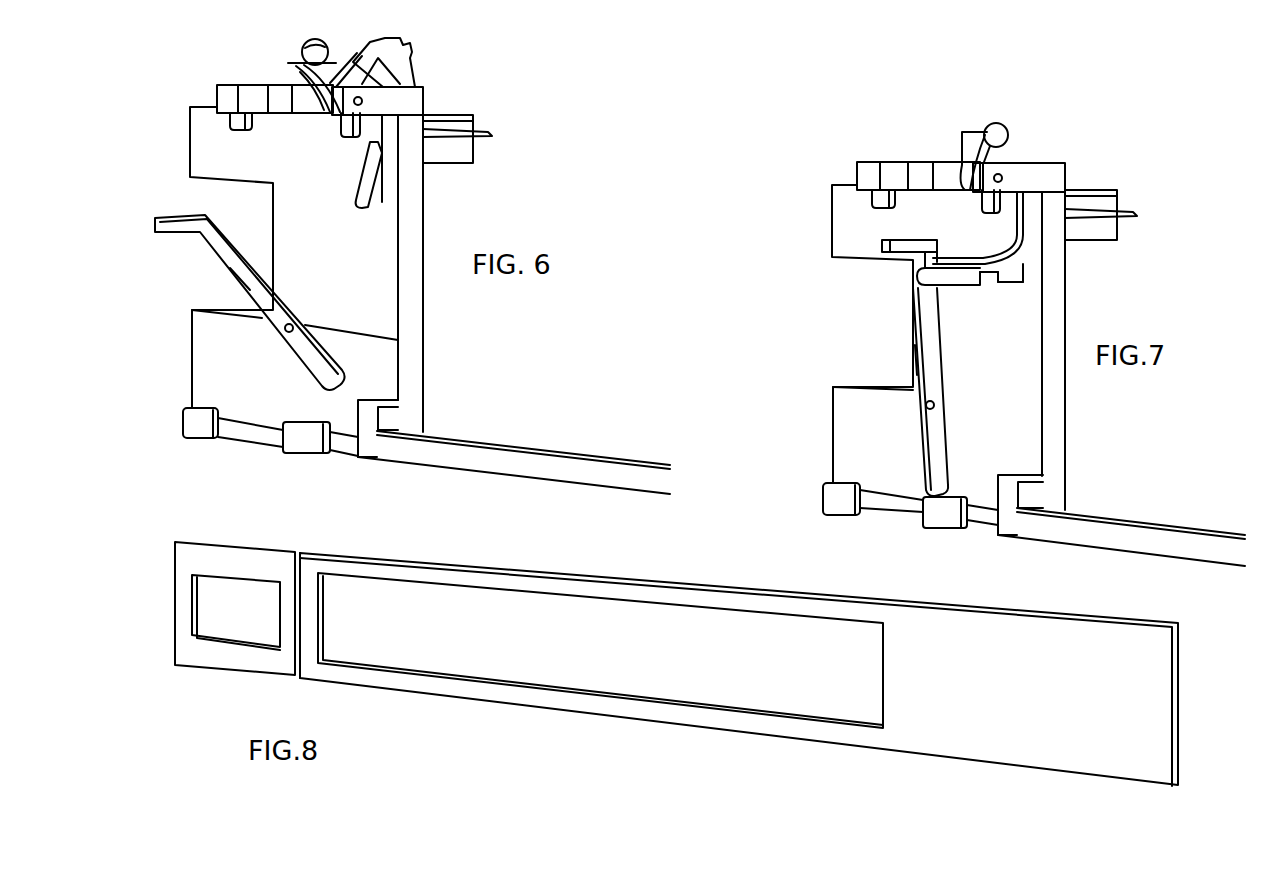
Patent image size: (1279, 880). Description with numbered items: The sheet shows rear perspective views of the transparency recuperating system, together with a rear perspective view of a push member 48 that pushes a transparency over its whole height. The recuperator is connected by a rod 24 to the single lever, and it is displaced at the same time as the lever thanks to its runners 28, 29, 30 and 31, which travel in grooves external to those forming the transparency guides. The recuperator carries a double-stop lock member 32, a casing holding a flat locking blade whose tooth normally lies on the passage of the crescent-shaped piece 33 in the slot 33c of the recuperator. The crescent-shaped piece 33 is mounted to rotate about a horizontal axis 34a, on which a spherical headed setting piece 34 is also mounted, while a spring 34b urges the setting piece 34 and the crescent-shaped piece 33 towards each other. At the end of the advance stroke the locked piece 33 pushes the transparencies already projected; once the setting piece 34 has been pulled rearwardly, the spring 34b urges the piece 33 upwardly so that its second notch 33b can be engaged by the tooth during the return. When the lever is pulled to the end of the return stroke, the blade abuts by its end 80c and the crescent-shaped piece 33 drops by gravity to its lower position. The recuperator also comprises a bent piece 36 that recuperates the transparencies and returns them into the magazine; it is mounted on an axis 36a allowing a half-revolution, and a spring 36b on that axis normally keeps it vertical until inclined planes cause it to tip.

In FIG. 6, the rod 24 is at (528, 447).
In FIG. 7, the rod 24 is at (1116, 522).
In FIG. 6, the runner 28 is at (230, 121).
In FIG. 7, the runner 28 is at (928, 215).
In FIG. 6, the runner 29 is at (192, 257).
In FIG. 7, the runner 29 is at (872, 334).
In FIG. 6, the runner 30 is at (303, 437).
In FIG. 7, the runner 30 is at (873, 388).
In FIG. 6, the runner 31 is at (206, 427).
In FIG. 7, the runner 31 is at (933, 505).
In FIG. 6, the double-stop lock member 32 is at (460, 160).
In FIG. 7, the double-stop lock member 32 is at (1091, 215).
In FIG. 6, the crescent-shaped piece 33 is at (410, 73).
In FIG. 7, the crescent-shaped piece 33 is at (962, 289).
In FIG. 7, the second notch 33b is at (990, 283).
In FIG. 6, the slot 33c is at (370, 143).
In FIG. 7, the slot 33c is at (978, 228).
In FIG. 6, the spherical headed setting piece 34 is at (300, 50).
In FIG. 7, the spherical headed setting piece 34 is at (993, 128).
In FIG. 6, the horizontal axis 34a is at (365, 101).
In FIG. 7, the horizontal axis 34a is at (1002, 177).
In FIG. 6, the spring 34b is at (290, 62).
In FIG. 7, the spring 34b is at (960, 143).
In FIG. 6, the bent piece 36 is at (233, 257).
In FIG. 7, the bent piece 36 is at (927, 347).
In FIG. 6, the axis 36a is at (342, 326).
In FIG. 7, the axis 36a is at (1053, 351).
In FIG. 6, the spring 36b is at (239, 285).
In FIG. 7, the spring 36b is at (919, 358).
In FIG. 8, the push member 48 is at (905, 740).
In FIG. 6, the end of locking blade 80c is at (488, 143).
In FIG. 7, the end of locking blade 80c is at (1120, 210).